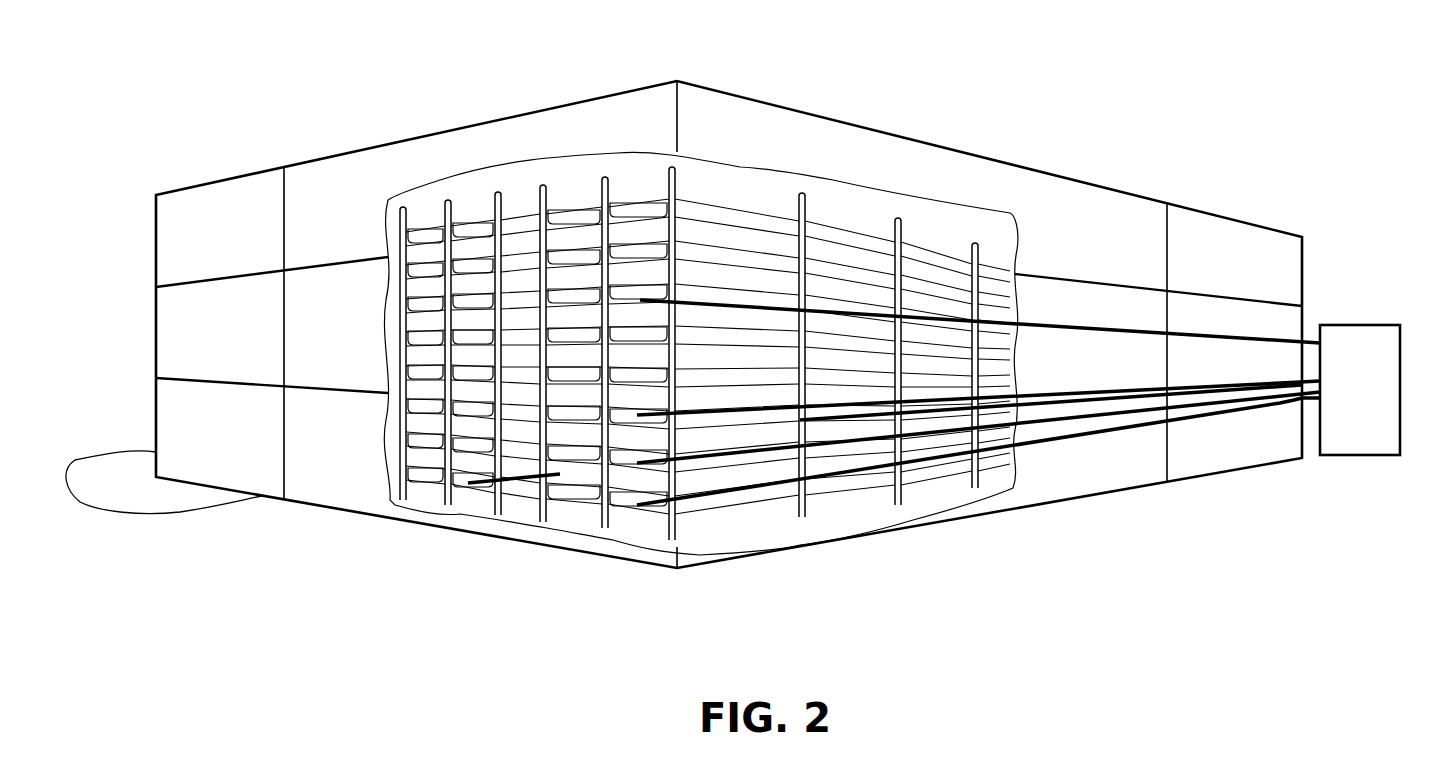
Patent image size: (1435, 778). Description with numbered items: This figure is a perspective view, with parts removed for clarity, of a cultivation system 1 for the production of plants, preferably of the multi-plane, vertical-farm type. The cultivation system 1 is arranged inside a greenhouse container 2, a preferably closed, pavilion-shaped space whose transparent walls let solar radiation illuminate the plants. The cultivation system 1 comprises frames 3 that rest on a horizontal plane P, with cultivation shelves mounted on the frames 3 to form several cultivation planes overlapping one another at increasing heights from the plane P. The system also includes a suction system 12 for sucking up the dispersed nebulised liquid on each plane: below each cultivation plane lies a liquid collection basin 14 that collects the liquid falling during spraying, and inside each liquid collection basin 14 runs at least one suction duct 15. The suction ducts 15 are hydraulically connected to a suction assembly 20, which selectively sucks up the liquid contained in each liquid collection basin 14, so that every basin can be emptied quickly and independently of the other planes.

The cultivation system 1 is at (746, 520).
The greenhouse container 2 is at (1110, 228).
The frames 3 is at (452, 507).
The suction system 12 is at (1312, 405).
The liquid collection basin 14 is at (575, 218).
The suction duct 15 is at (1255, 337).
The suction assembly 20 is at (1378, 394).
The horizontal plane P is at (112, 477).